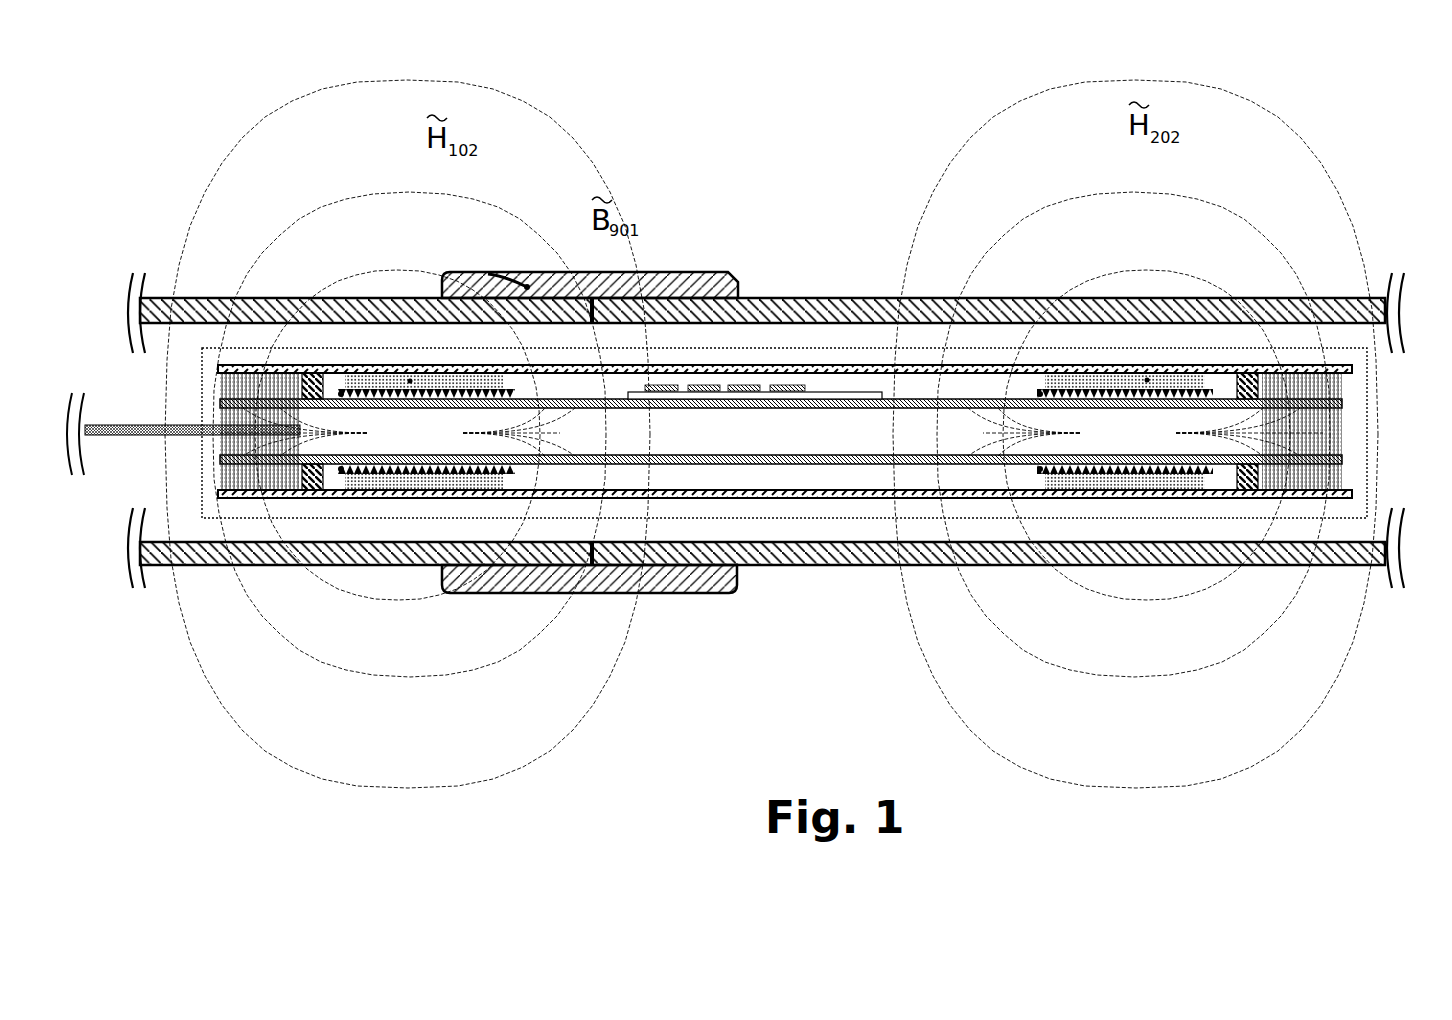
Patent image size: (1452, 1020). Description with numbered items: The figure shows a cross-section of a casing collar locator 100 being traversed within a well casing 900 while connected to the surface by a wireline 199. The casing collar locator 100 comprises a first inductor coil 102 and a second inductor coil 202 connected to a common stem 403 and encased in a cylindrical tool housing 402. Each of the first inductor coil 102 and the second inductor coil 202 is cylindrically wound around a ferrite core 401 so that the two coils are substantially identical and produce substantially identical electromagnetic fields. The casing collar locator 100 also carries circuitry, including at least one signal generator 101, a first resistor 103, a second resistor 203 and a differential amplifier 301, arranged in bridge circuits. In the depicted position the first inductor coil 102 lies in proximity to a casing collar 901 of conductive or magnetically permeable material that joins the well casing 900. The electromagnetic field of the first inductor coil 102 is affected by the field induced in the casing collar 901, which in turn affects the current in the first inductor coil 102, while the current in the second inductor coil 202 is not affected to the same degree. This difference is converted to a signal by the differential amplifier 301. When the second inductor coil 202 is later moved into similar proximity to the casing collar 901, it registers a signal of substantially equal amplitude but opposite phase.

The casing collar locator 100 is at (805, 433).
The signal generator 101 is at (755, 278).
The first inductor coil 102 is at (408, 380).
The first resistor 103 is at (682, 388).
The wireline 199 is at (183, 434).
The second inductor coil 202 is at (1150, 378).
The second resistor 203 is at (744, 388).
The differential amplifier 301 is at (768, 385).
The ferrite core 401 is at (362, 365).
The tool housing 402 is at (740, 466).
The common stem 403 is at (800, 497).
The well casing 900 is at (783, 430).
The casing collar 901 is at (623, 240).